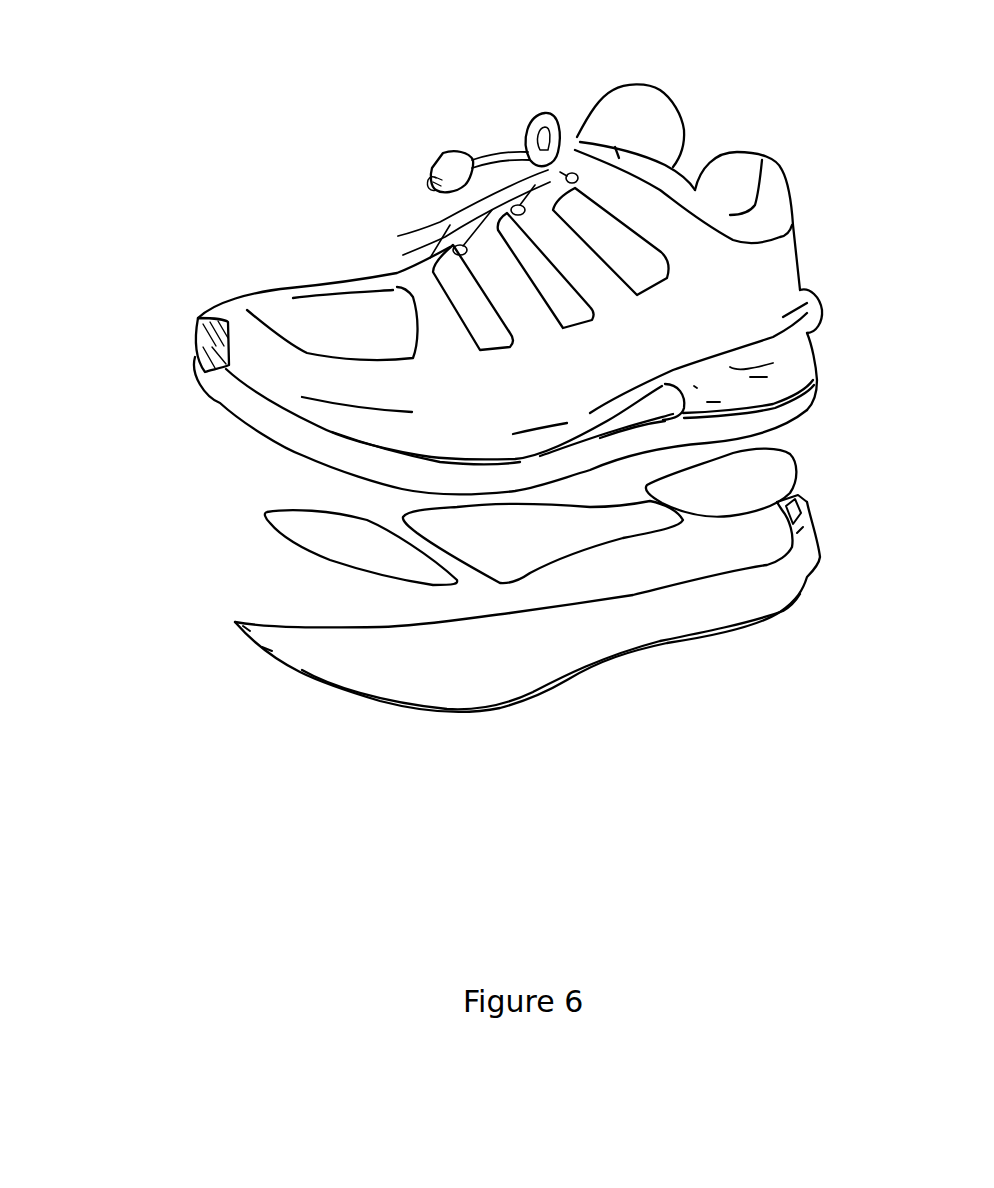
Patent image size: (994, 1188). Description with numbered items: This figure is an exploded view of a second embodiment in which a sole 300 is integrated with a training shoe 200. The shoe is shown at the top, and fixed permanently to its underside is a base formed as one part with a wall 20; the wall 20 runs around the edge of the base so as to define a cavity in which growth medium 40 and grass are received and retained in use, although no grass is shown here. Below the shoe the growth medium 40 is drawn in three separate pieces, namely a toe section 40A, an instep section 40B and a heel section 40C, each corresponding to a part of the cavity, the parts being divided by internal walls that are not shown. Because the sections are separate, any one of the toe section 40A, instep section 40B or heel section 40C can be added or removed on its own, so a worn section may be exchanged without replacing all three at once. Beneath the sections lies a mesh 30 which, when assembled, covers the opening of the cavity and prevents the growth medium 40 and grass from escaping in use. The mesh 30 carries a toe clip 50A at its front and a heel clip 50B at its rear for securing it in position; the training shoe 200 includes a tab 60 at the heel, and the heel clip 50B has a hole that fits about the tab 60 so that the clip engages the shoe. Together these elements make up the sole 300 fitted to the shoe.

The training shoe 200 is at (410, 188).
The tab 60 is at (813, 303).
The wall 20 is at (228, 397).
The sole 300 is at (128, 368).
The growth medium 40 is at (477, 552).
The toe section 40A is at (361, 547).
The instep section 40B is at (543, 542).
The heel section 40C is at (721, 483).
The mesh 30 is at (548, 645).
The toe clip 50A is at (270, 653).
The heel clip 50B is at (795, 530).